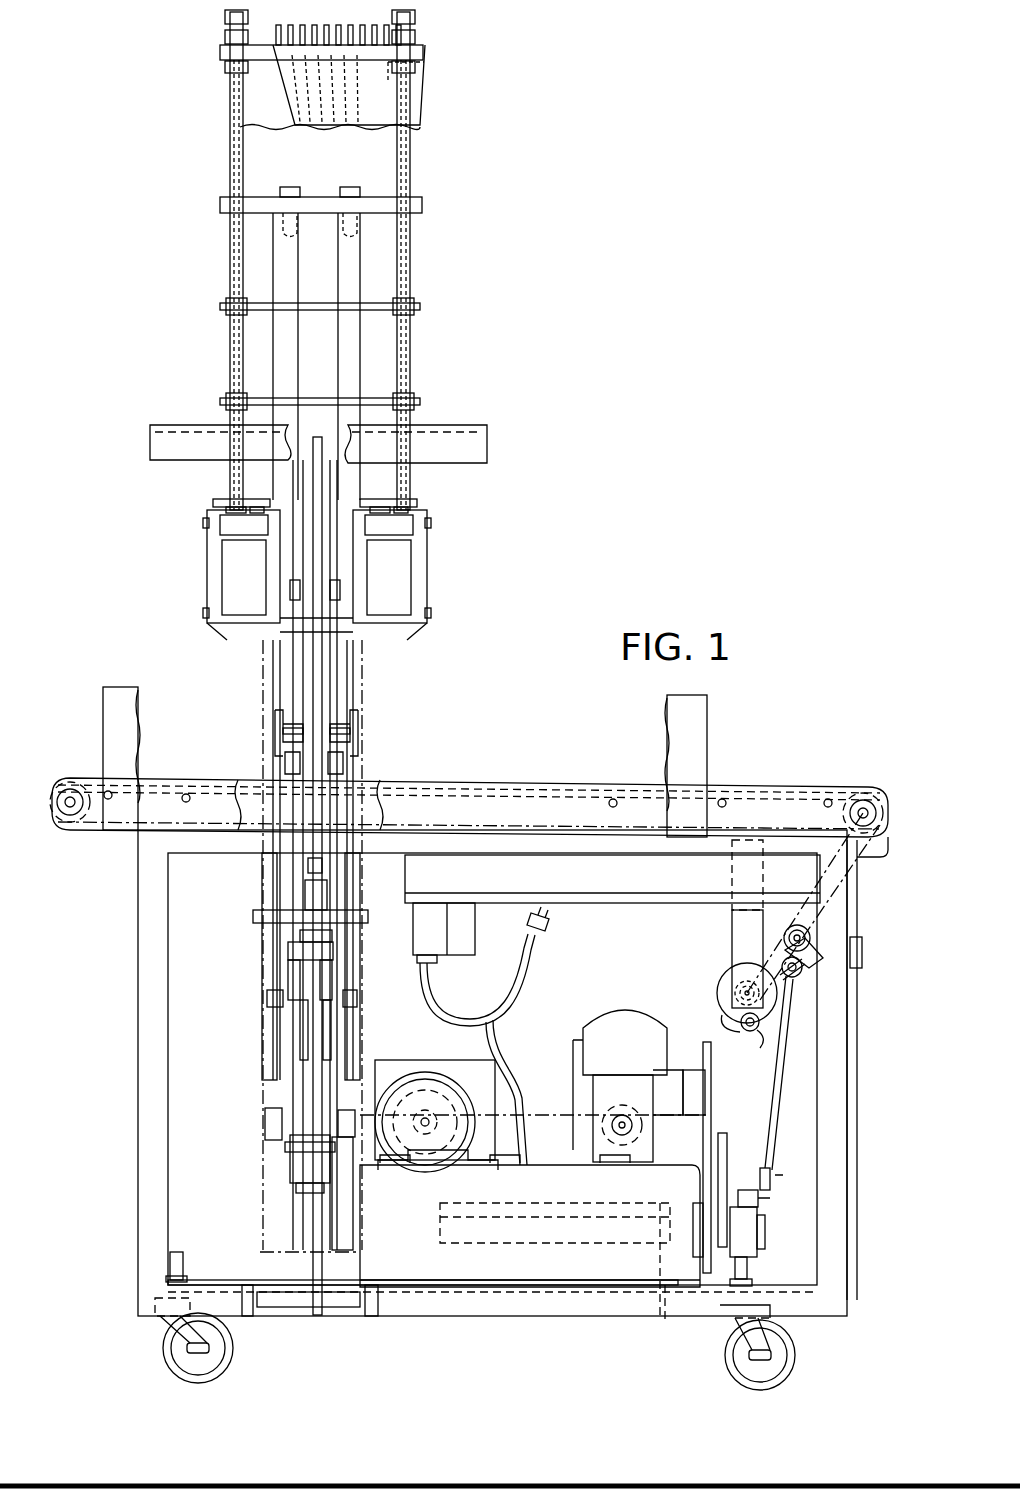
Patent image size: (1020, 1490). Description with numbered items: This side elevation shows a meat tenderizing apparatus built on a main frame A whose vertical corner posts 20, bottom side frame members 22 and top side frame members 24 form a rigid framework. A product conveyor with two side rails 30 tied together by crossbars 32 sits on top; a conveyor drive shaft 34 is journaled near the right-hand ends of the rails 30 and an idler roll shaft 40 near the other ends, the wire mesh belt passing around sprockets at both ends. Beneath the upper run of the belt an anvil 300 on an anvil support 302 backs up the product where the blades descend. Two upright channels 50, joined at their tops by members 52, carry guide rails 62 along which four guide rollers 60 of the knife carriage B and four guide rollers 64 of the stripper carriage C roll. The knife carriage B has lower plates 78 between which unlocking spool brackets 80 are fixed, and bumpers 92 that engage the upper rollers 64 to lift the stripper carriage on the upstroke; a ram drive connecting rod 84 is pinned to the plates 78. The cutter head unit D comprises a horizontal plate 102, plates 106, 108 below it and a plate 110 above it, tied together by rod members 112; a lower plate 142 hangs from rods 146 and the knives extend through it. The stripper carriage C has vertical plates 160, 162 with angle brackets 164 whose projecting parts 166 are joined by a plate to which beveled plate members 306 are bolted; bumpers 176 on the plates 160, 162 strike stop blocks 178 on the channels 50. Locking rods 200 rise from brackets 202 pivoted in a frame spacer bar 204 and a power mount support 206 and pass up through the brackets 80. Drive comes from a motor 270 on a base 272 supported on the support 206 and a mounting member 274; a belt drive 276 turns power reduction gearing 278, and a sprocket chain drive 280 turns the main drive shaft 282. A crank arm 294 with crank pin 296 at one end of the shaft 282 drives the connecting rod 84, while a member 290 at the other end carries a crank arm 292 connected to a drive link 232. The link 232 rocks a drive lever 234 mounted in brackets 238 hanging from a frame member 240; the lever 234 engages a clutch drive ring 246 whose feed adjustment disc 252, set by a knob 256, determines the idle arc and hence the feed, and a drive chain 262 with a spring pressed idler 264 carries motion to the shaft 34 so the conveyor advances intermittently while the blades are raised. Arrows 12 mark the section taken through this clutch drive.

The section line 12 is at (758, 943).
The vertical corner posts 20 is at (138, 1106).
The bottom side frame members 22 is at (570, 1317).
The top side frame members 24 is at (560, 866).
The side rails 30 is at (762, 766).
The crossbars 32 is at (615, 800).
The conveyor drive shaft 34 is at (870, 806).
The idler roll shaft 40 is at (68, 825).
The upright channels 50 is at (280, 482).
The members 52 is at (450, 430).
The guide rollers 60 is at (340, 480).
The guide rails 62 is at (312, 663).
The guide rollers 64 is at (345, 690).
The parallel plates 78 is at (290, 1020).
The unlocking spool brackets 80 is at (300, 937).
The ram drive connecting rod 84 is at (298, 1186).
The bumpers 92 is at (284, 758).
The horizontal plate 102 is at (220, 203).
The horizontal plate 106 is at (220, 305).
The horizontal plate 108 is at (220, 400).
The horizontal plate 110 is at (220, 52).
The rod members 112 is at (231, 350).
The horizontal plate 142 is at (213, 502).
The rods 146 is at (240, 470).
The vertical plates 160 is at (355, 766).
The vertical plates 162 is at (262, 876).
The angle brackets 164 is at (358, 698).
The outwardly projecting parts 166 is at (220, 545).
The bumpers 176 is at (265, 1000).
The stop blocks 178 is at (355, 1100).
The locking rods 200 is at (305, 1268).
The brackets 202 is at (330, 1308).
The frame spacer bar 204 is at (248, 1316).
The power mount support 206 is at (372, 1316).
The drive link 232 is at (770, 1170).
The drive lever 234 is at (805, 985).
The brackets 238 is at (732, 918).
The frame member 240 is at (735, 860).
The clutch drive ring 246 is at (718, 990).
The feed adjustment disc 252 is at (735, 1024).
The knob 256 is at (760, 1038).
The drive chain 262 is at (852, 882).
The spring pressed idler 264 is at (812, 930).
The motor 270 is at (425, 1072).
The base 272 is at (555, 1166).
The mounting member 274 is at (665, 1320).
The belt drive 276 is at (538, 1100).
The power reduction gearing 278 is at (618, 1010).
The sprocket chain drive 280 is at (712, 1152).
The main drive shaft 282 is at (580, 1238).
The member 290 is at (745, 1244).
The crank arm 292 is at (740, 1192).
The crank arm 294 is at (330, 1245).
The crank pin 296 is at (290, 1156).
The anvil 300 is at (243, 785).
The anvil support 302 is at (384, 814).
The plate members 306 is at (428, 596).